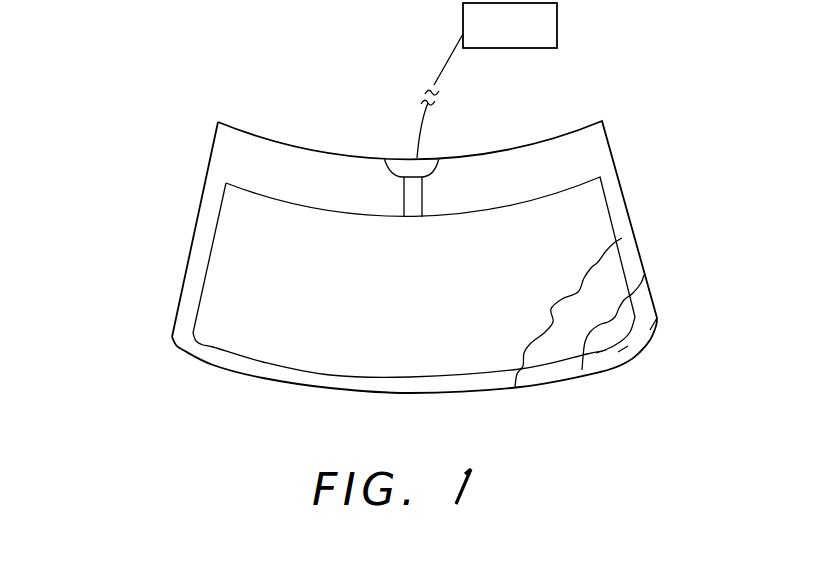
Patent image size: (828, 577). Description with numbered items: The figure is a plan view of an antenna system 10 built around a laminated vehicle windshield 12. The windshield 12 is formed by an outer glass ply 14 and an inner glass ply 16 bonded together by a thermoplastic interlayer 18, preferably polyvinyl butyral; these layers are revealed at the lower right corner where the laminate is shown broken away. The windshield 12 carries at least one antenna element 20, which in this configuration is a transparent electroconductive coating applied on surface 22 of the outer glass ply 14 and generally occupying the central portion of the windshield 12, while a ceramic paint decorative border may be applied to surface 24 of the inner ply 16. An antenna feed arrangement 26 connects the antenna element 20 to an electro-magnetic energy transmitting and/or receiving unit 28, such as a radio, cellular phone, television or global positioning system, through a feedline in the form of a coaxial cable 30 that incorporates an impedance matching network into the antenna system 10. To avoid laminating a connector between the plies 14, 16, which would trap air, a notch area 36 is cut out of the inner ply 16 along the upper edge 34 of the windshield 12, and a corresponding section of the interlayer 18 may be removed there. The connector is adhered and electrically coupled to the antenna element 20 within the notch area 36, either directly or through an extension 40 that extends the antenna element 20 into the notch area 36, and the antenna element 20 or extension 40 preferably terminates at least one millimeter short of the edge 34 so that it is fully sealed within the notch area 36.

The antenna system 10 is at (387, 250).
The laminated vehicle windshield 12 is at (200, 363).
The outer glass ply 14 is at (658, 318).
The inner glass ply 16 is at (597, 265).
The thermoplastic interlayer 18 is at (617, 310).
The antenna element 20 is at (601, 349).
The surface 22 is at (622, 346).
The surface 24 is at (595, 137).
The antenna feed arrangement 26 is at (397, 146).
The electro-magnetic energy transmitting and/or receiving unit 28 is at (510, 25).
The coaxial cable 30 is at (450, 60).
The upper edge 34 is at (528, 152).
The notch area 36 is at (390, 172).
The extension 40 is at (403, 198).